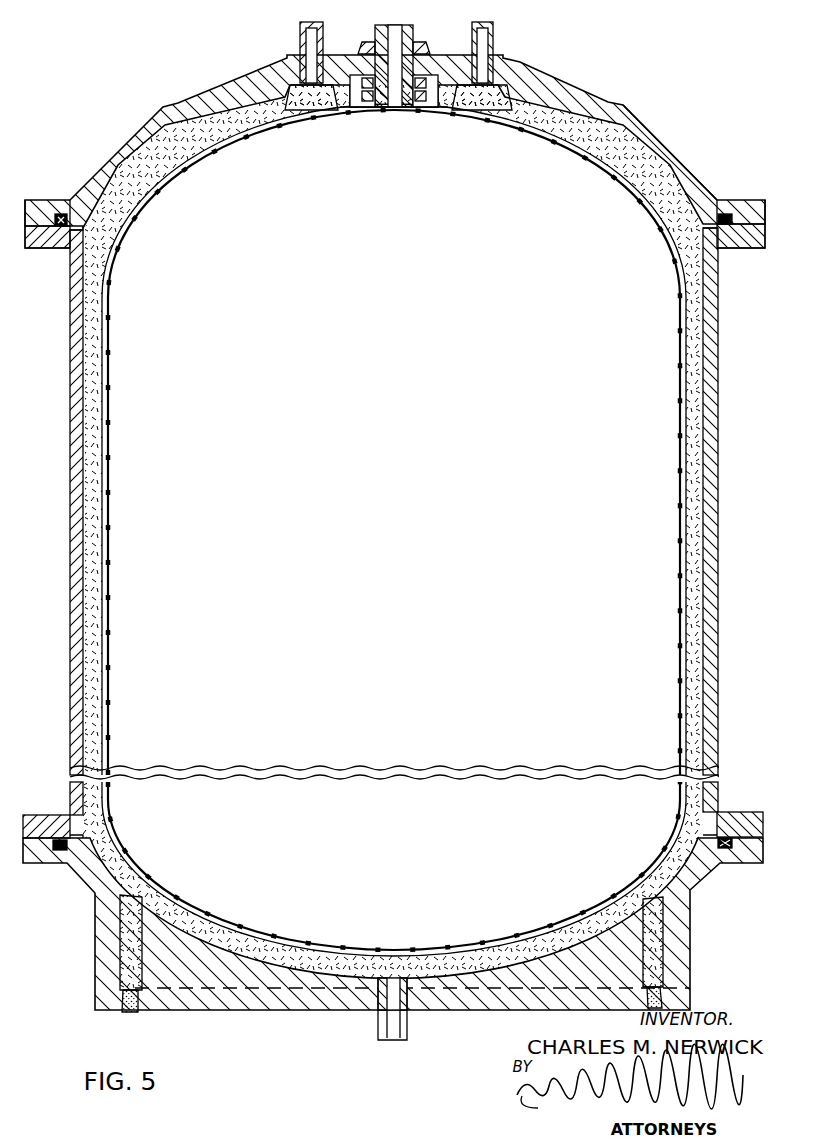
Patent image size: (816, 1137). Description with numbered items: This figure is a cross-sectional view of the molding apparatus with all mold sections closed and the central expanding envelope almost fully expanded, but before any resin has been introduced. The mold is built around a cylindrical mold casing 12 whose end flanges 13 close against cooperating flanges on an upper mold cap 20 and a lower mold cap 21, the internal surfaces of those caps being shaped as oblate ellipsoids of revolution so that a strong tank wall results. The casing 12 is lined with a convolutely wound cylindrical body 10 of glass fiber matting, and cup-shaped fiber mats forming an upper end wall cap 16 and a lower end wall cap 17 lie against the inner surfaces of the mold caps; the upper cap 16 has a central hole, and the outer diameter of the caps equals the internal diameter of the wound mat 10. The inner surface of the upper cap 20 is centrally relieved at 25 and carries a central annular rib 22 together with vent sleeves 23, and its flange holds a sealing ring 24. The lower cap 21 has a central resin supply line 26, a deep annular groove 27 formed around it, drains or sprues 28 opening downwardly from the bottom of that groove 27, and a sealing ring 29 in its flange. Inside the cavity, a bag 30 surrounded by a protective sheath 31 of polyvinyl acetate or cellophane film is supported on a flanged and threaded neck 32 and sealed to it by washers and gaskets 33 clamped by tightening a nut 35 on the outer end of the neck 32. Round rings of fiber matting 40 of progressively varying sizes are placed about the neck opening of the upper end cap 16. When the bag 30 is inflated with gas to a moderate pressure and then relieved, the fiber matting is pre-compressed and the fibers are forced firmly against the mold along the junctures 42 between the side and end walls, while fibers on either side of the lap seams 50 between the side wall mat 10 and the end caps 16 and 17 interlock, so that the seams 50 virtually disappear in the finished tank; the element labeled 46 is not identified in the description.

The cylindrical body of fiber matting 10 is at (84, 468).
The cylindrical mold casing 12 is at (74, 558).
The end flanges 13 is at (50, 240).
The upper end wall cap 16 is at (232, 104).
The lower end wall cap 17 is at (238, 922).
The upper mold cap 20 is at (662, 153).
The lower mold cap 21 is at (490, 1010).
The central annular rib 22 is at (346, 114).
The vent sleeves 23 is at (300, 34).
The sealing ring 24 is at (62, 212).
The central relieved area 25 is at (500, 96).
The central resin supply line 26 is at (378, 1030).
The deep annular groove 27 is at (666, 940).
The drains or sprues 28 is at (126, 1010).
The sealing ring 29 is at (726, 850).
The bag 30 is at (320, 120).
The protective sheath 31 is at (110, 386).
The flanged and threaded neck 32 is at (414, 40).
The washers and gaskets 33 is at (430, 78).
The nut 35 is at (366, 48).
The round rings of fiber matting 40 is at (292, 74).
The junctures 42 is at (122, 232).
The liner wall 46 is at (118, 362).
The lap seams 50 is at (133, 208).